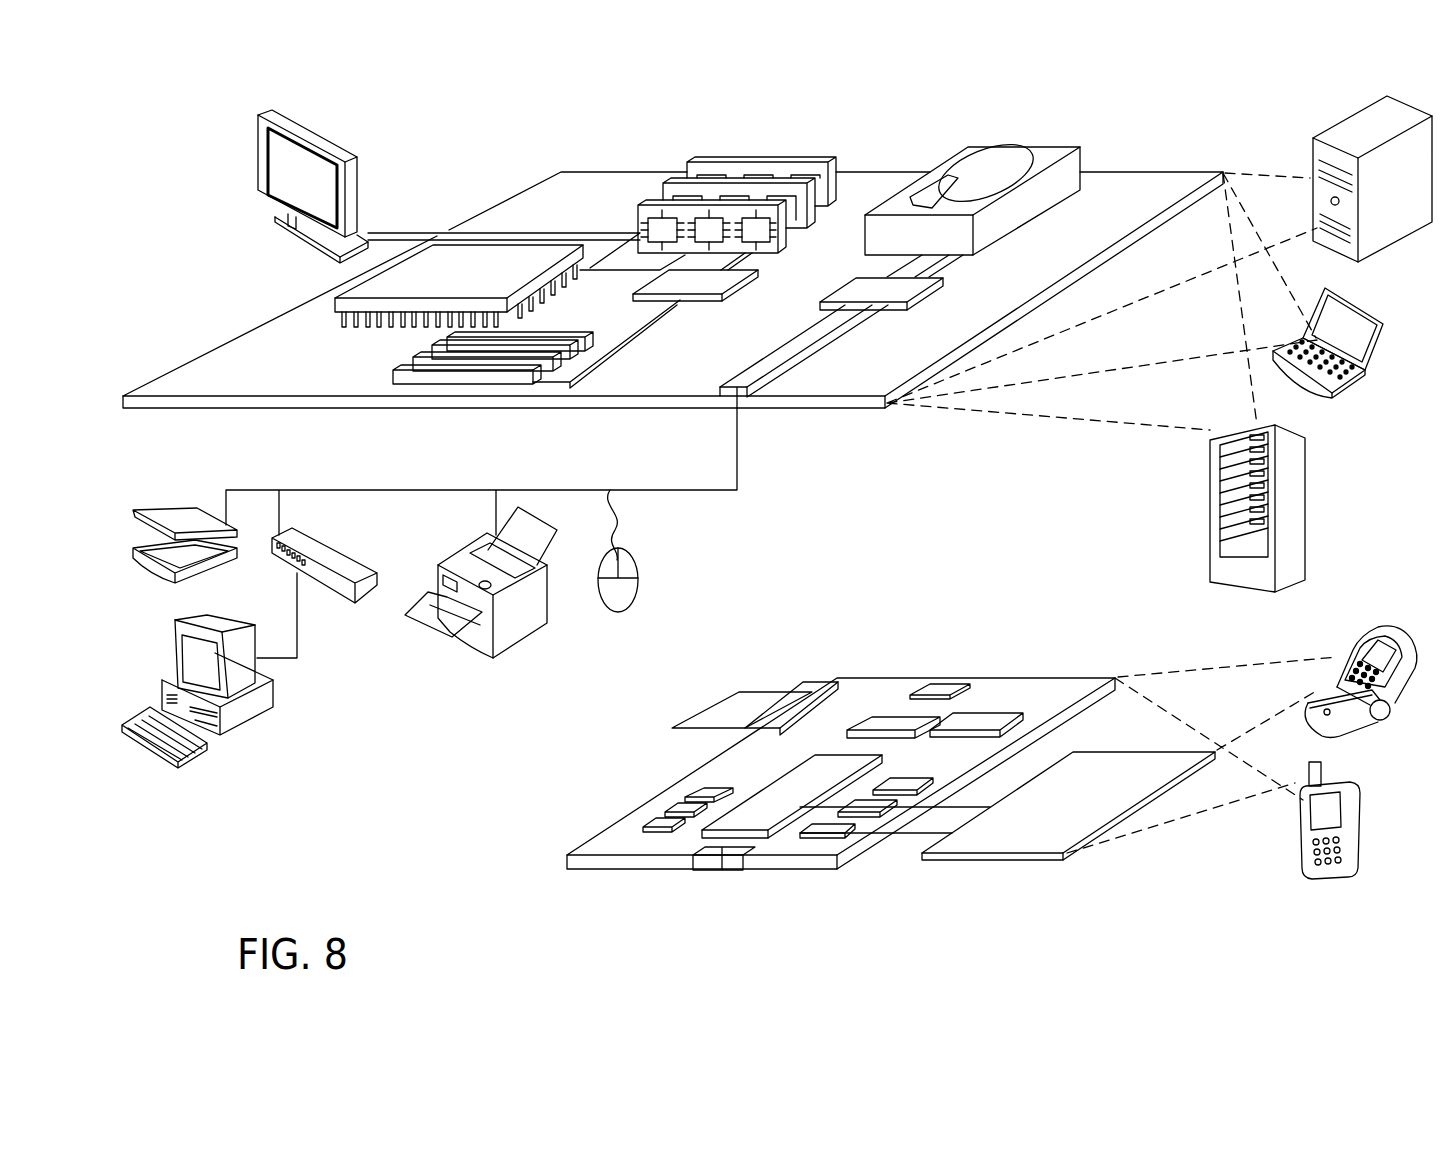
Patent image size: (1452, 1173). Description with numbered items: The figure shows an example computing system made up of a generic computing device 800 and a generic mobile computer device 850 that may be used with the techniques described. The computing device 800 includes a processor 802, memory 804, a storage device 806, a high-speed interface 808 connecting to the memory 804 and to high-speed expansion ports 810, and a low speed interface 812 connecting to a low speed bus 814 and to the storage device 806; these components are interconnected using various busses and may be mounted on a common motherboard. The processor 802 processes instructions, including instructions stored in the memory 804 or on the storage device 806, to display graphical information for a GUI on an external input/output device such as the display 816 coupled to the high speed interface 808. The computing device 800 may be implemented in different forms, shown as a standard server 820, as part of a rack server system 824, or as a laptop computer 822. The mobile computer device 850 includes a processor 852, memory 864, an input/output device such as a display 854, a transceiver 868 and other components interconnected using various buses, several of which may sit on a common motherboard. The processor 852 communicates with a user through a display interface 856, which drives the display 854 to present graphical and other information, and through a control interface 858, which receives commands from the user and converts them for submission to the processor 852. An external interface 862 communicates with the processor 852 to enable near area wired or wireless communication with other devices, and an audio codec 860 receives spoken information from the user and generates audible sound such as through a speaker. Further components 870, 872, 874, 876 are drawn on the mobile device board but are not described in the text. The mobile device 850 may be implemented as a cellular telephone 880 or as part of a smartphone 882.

The computing device 800 is at (463, 139).
The processor 802 is at (333, 300).
The memory 804 is at (700, 160).
The storage device 806 is at (966, 148).
The high-speed interface 808 is at (667, 285).
The high-speed expansion ports 810 is at (410, 367).
The low speed interface 812 is at (862, 287).
The low speed bus 814 is at (747, 395).
The display 816 is at (260, 112).
The standard server 820 is at (1313, 148).
The laptop computer 822 is at (1388, 320).
The rack server system 824 is at (1210, 537).
The mobile computer device 850 is at (539, 866).
The processor 852 is at (760, 822).
The display 854 is at (1027, 845).
The display interface 856 is at (838, 828).
The control interface 858 is at (873, 805).
The audio codec 860 is at (903, 782).
The external interface 862 is at (722, 870).
The memory 864 is at (666, 812).
The transceiver 868 is at (980, 725).
The audio chip 870 is at (950, 685).
The battery strip 872 is at (812, 690).
The antenna plate 874 is at (740, 688).
The baseband chip 876 is at (893, 720).
The cellular telephone 880 is at (1363, 628).
The smartphone 882 is at (1298, 827).